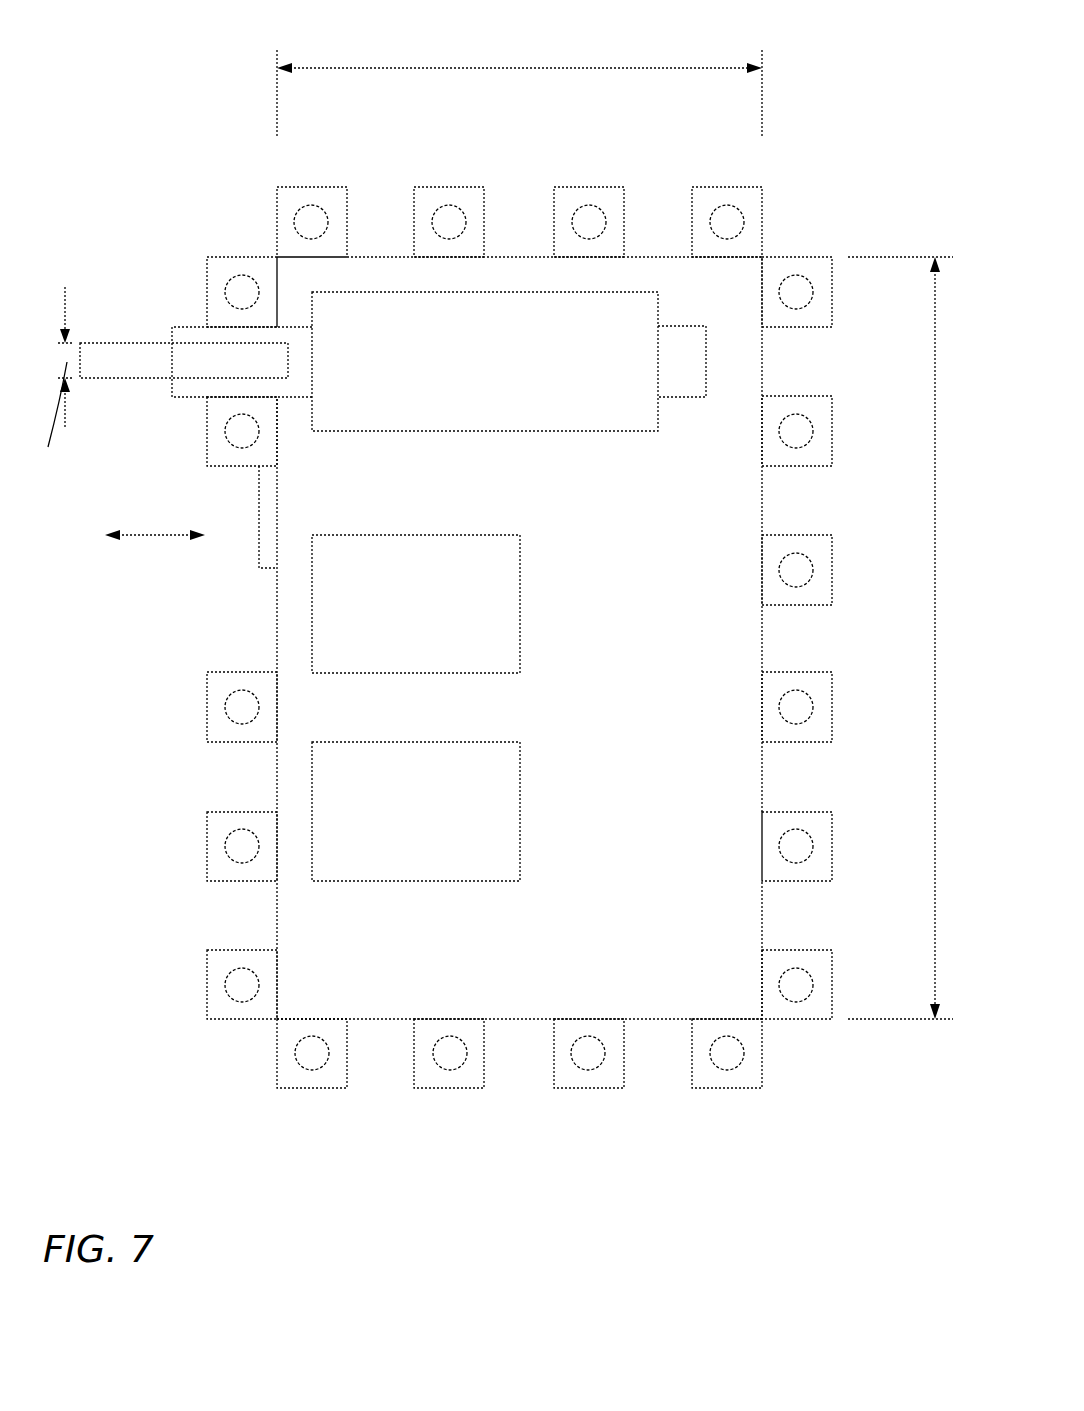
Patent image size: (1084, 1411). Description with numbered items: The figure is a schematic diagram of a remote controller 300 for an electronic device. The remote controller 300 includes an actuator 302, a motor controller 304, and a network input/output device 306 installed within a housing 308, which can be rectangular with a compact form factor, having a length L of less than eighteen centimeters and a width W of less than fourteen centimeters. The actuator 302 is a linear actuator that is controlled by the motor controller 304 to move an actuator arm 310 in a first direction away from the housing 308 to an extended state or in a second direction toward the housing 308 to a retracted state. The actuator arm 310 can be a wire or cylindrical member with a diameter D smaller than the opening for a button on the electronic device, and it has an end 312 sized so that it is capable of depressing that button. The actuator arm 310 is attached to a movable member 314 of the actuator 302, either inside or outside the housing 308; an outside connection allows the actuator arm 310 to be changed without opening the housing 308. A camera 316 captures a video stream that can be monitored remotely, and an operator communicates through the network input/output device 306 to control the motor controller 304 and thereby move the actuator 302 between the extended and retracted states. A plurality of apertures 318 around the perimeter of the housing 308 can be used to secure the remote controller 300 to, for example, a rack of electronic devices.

The remote controller 300 is at (250, 96).
The actuator 302 is at (485, 292).
The motor controller 304 is at (312, 603).
The network input/output device 306 is at (312, 777).
The housing 308 is at (519, 257).
The actuator arm 310 is at (160, 343).
The end 312 is at (80, 343).
The movable member 314 is at (235, 257).
The camera 316 is at (259, 557).
The apertures 318 is at (727, 1053).